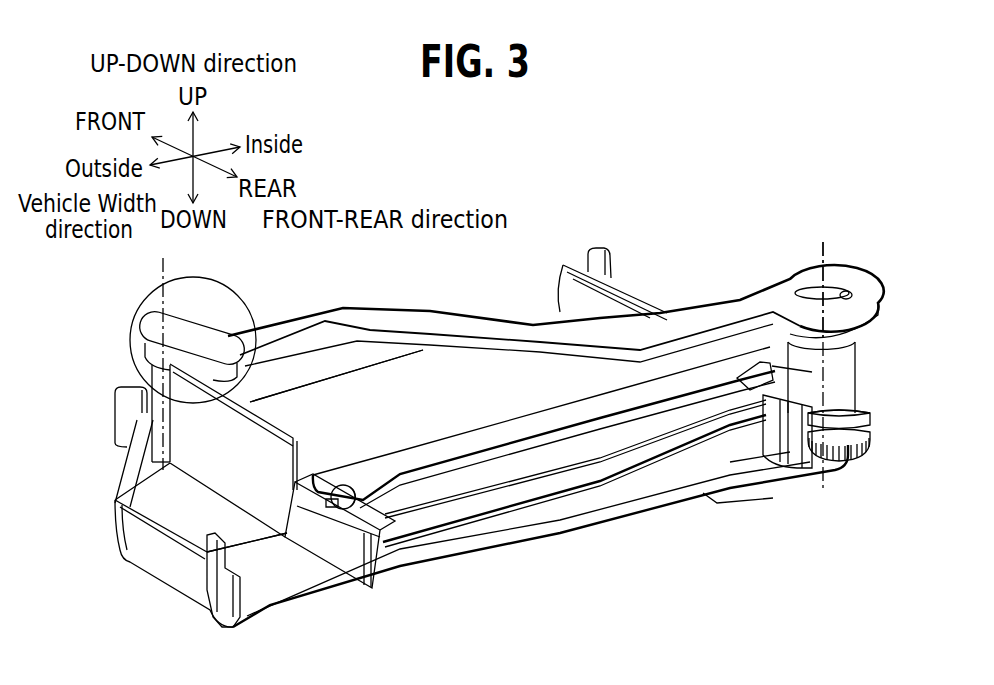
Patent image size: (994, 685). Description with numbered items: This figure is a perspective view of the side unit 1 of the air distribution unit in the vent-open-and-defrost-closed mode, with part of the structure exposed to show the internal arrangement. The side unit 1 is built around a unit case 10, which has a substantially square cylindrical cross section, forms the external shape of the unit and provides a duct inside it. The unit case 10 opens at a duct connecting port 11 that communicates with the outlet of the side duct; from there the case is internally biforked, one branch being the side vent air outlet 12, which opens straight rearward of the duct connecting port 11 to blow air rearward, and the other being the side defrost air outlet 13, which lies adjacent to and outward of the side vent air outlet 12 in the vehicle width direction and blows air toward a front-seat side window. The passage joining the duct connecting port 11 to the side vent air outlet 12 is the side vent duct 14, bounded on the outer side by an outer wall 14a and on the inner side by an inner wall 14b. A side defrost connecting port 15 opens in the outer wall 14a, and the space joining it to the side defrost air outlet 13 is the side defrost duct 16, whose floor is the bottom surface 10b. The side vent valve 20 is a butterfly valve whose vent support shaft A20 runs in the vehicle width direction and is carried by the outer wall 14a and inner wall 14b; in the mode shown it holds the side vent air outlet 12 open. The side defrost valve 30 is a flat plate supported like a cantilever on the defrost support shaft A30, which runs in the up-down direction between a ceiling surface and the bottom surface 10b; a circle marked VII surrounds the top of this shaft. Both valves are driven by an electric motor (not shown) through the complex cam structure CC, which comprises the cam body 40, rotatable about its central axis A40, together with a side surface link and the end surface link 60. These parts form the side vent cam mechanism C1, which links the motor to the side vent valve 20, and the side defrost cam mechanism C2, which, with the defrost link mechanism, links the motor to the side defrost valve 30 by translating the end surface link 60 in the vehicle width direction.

The side unit 1 is at (667, 227).
The unit case 10 is at (560, 263).
The bottom surface 10b is at (173, 502).
The duct connecting port 11 is at (372, 383).
The side vent air outlet 12 is at (673, 483).
The side defrost air outlet 13 is at (287, 575).
The side vent duct 14 is at (440, 410).
The outer wall 14a is at (383, 557).
The inner wall 14b is at (787, 478).
The side defrost connecting port 15 is at (285, 492).
The side defrost duct 16 is at (230, 524).
The side vent valve 20 is at (723, 407).
The side defrost valve 30 is at (213, 440).
The cam body 40 is at (887, 378).
The end surface link 60 is at (463, 327).
The vent support shaft A20 is at (507, 493).
The defrost support shaft A30 is at (160, 270).
The central axis A40 is at (820, 263).
The side vent cam mechanism C1 is at (870, 397).
The side defrost cam mechanism C2 is at (840, 240).
The complex cam structure CC is at (862, 322).
The section VII indicator VII is at (130, 317).